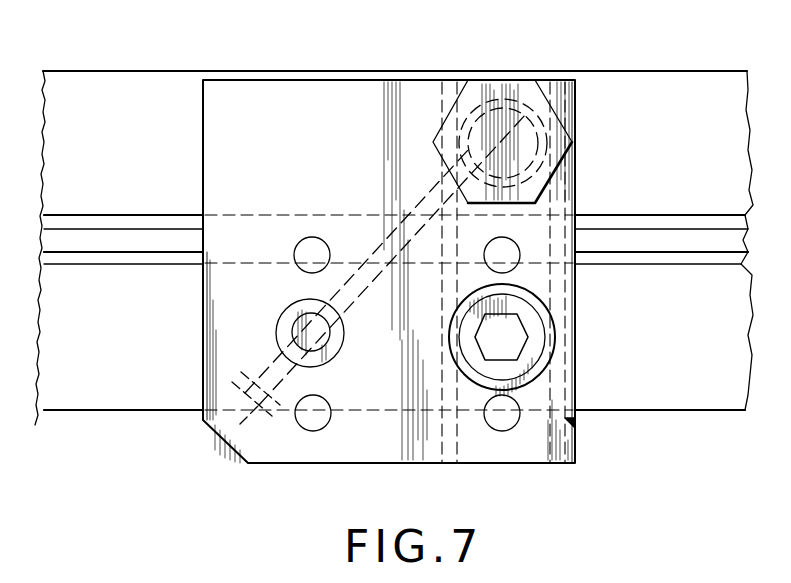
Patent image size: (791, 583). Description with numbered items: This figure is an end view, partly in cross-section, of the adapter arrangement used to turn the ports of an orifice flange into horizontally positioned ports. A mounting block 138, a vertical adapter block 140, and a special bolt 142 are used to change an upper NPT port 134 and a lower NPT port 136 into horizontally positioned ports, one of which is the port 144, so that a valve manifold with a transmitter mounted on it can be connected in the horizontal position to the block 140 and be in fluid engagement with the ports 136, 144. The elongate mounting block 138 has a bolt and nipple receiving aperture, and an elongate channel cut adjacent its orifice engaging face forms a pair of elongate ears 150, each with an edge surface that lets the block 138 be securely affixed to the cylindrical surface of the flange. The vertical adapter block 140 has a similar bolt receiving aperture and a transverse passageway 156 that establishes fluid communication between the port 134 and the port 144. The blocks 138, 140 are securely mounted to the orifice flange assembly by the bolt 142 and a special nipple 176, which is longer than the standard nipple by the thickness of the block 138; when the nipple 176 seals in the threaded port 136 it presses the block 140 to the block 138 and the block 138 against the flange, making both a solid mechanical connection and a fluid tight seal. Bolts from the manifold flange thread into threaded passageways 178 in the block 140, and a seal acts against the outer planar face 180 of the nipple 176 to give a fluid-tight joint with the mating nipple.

The upper NPT port 134 is at (569, 78).
The lower NPT port 136 is at (505, 337).
The mounting block 138 is at (578, 426).
The vertical adapter block 140 is at (203, 143).
The special bolt 142 is at (521, 95).
The horizontally positioned port 144 is at (310, 331).
The elongate ears 150 is at (440, 93).
The transverse passageway 156 is at (417, 193).
The special nipple 176 is at (525, 315).
The threaded passageways 178 is at (312, 254).
The outer planar face 180 is at (535, 375).